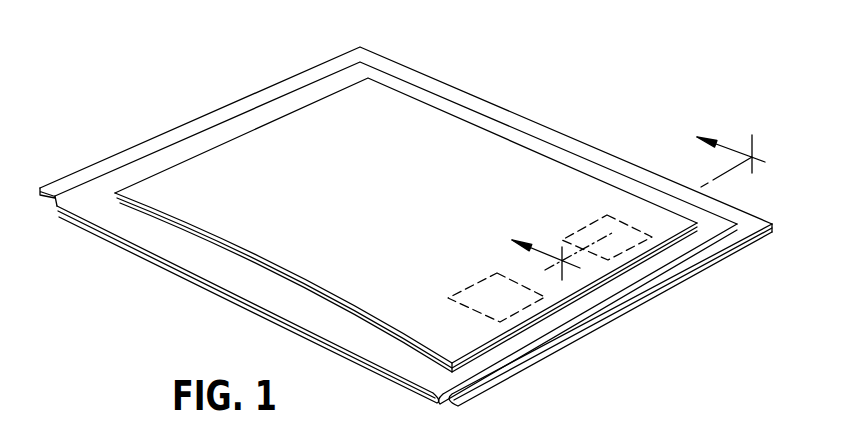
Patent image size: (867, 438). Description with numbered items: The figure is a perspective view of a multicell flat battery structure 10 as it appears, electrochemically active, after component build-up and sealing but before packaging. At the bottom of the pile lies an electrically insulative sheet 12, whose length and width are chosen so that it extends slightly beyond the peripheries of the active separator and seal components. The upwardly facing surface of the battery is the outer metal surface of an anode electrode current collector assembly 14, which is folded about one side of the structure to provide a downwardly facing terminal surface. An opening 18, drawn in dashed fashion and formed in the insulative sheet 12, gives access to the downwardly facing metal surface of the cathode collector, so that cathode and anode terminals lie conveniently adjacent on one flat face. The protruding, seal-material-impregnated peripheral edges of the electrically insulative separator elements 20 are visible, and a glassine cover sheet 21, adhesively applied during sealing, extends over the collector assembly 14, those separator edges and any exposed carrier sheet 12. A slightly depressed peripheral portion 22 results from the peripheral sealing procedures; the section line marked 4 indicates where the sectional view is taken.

The multicell flat battery structure 10 is at (593, 114).
The electrically insulative sheet 12 is at (642, 307).
The anode electrode current collector assembly 14 is at (352, 73).
The opening 18 is at (590, 223).
The electrically insulative separator elements 20 is at (292, 75).
The cover sheet 21 is at (160, 258).
The depressed peripheral portion 22 is at (467, 110).
The section line 4- 4 is at (648, 208).